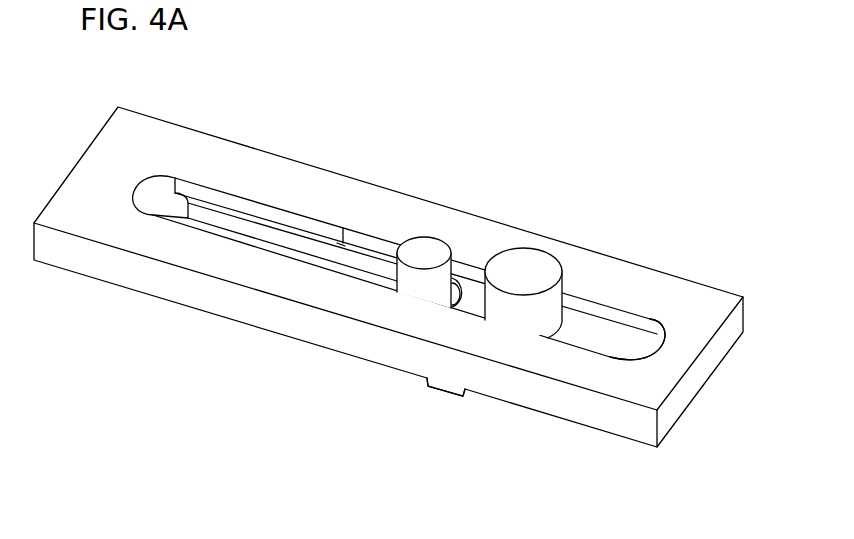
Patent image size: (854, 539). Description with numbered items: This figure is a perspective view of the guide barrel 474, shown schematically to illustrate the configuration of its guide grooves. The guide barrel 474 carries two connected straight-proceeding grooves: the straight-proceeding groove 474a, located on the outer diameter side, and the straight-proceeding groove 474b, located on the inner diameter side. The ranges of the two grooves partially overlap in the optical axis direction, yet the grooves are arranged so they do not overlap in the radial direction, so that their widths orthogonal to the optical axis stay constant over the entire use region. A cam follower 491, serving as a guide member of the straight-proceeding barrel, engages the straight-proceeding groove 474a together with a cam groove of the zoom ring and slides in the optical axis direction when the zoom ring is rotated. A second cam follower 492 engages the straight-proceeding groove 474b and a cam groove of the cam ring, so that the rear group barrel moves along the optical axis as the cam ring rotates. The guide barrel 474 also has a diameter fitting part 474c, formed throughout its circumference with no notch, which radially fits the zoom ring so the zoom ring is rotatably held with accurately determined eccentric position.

The guide barrel 474 is at (307, 187).
The straight-proceeding groove 474a is at (278, 217).
The straight-proceeding groove 474b is at (596, 309).
The diameter fitting part 474c is at (440, 393).
The cam follower 491 is at (424, 252).
The cam follower 492 is at (527, 270).